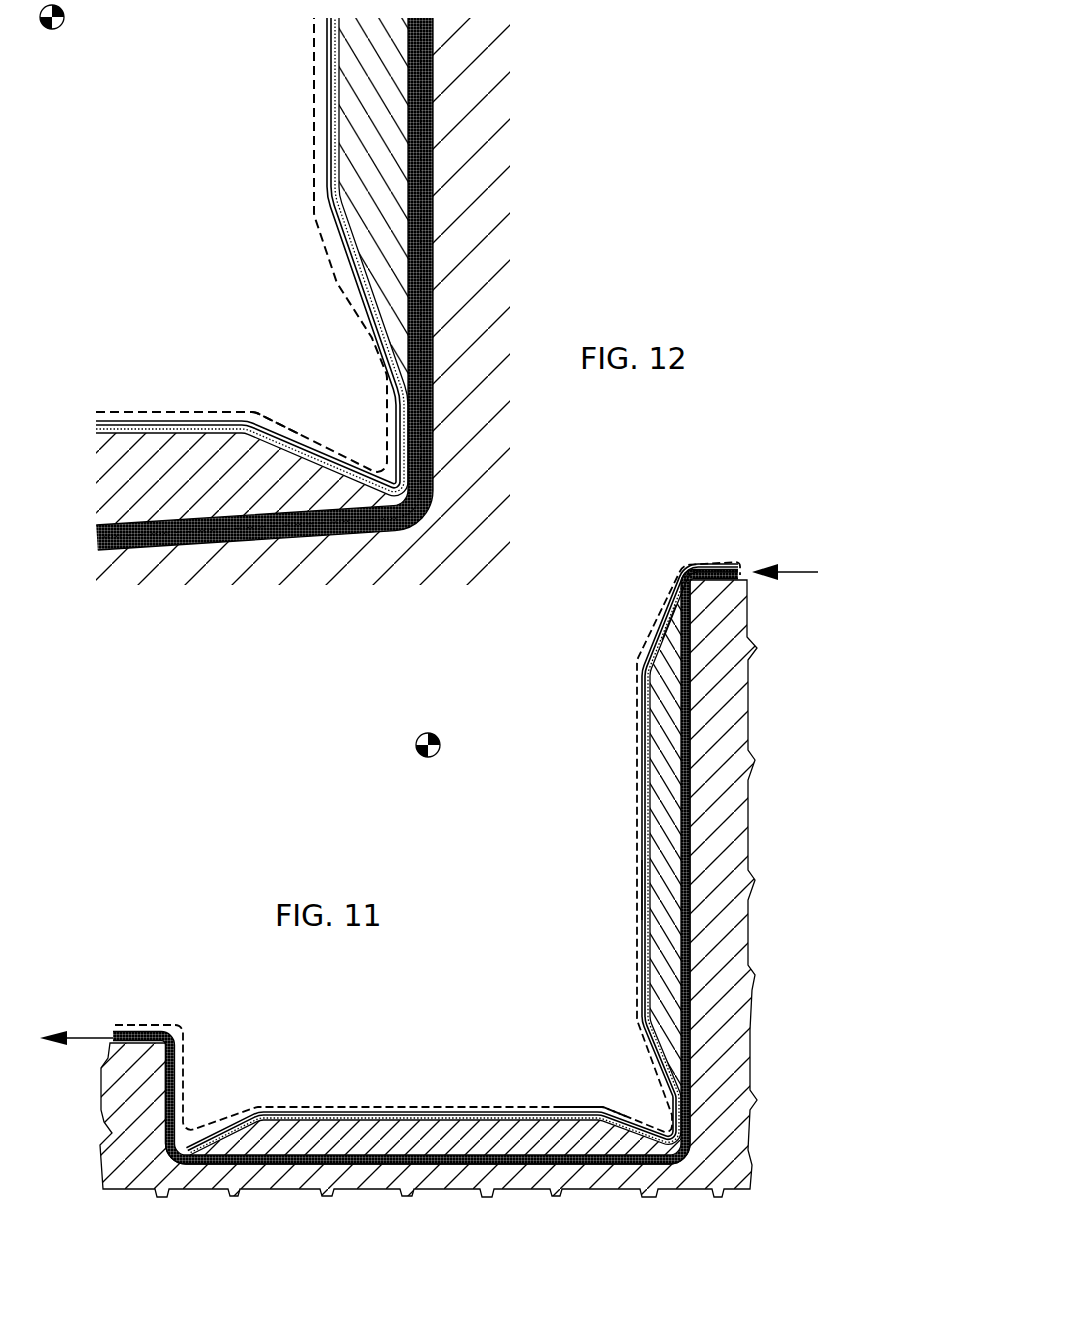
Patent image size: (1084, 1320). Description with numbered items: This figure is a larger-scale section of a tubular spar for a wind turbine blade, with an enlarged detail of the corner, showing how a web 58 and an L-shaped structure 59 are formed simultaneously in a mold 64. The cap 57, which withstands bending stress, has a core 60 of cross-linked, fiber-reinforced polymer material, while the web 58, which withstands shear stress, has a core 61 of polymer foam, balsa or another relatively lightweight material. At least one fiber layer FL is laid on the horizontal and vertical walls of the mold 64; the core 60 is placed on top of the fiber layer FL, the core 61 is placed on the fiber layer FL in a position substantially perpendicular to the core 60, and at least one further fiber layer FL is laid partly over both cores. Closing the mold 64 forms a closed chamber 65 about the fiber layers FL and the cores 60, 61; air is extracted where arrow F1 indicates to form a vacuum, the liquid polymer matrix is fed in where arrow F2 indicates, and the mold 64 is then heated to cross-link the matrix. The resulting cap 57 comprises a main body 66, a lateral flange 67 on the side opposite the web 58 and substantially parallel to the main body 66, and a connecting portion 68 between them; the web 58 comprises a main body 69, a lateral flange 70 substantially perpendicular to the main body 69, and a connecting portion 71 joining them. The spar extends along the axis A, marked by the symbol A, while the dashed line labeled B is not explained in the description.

In FIG. 12, the cap 57 is at (205, 392).
In FIG. 11, the cap 57 is at (487, 1055).
In FIG. 12, the web 58 is at (252, 257).
In FIG. 11, the web 58 is at (462, 850).
In FIG. 12, the L-shaped structure 59 is at (250, 245).
In FIG. 11, the L-shaped structure 59 is at (512, 797).
In FIG. 12, the core 60 is at (137, 468).
In FIG. 11, the core 60 is at (472, 1135).
In FIG. 12, the core 61 is at (385, 258).
In FIG. 11, the core 61 is at (672, 968).
In FIG. 12, the mold 64 is at (275, 560).
In FIG. 11, the mold 64 is at (718, 1142).
In FIG. 12, the closed chamber 65 is at (258, 412).
In FIG. 11, the closed chamber 65 is at (575, 1105).
In FIG. 11, the main body 66 is at (395, 1110).
In FIG. 11, the lateral flange 67 is at (140, 1030).
In FIG. 11, the connecting portion 68 is at (178, 1087).
In FIG. 11, the main body 69 is at (640, 888).
In FIG. 12, the lateral flange 70 is at (264, 284).
In FIG. 11, the lateral flange 70 is at (715, 568).
In FIG. 11, the connecting portion 71 is at (668, 596).
In FIG. 12, the fiber layer FL is at (332, 95).
In FIG. 11, the fiber layer FL is at (640, 740).
In FIG. 12, the axis A is at (62, 22).
In FIG. 11, the axis A is at (416, 760).
In FIG. 12, the boundary line B is at (340, 445).
In FIG. 11, the boundary line B is at (548, 1107).
In FIG. 11, the arrow F1 is at (82, 1035).
In FIG. 11, the arrow F2 is at (790, 577).